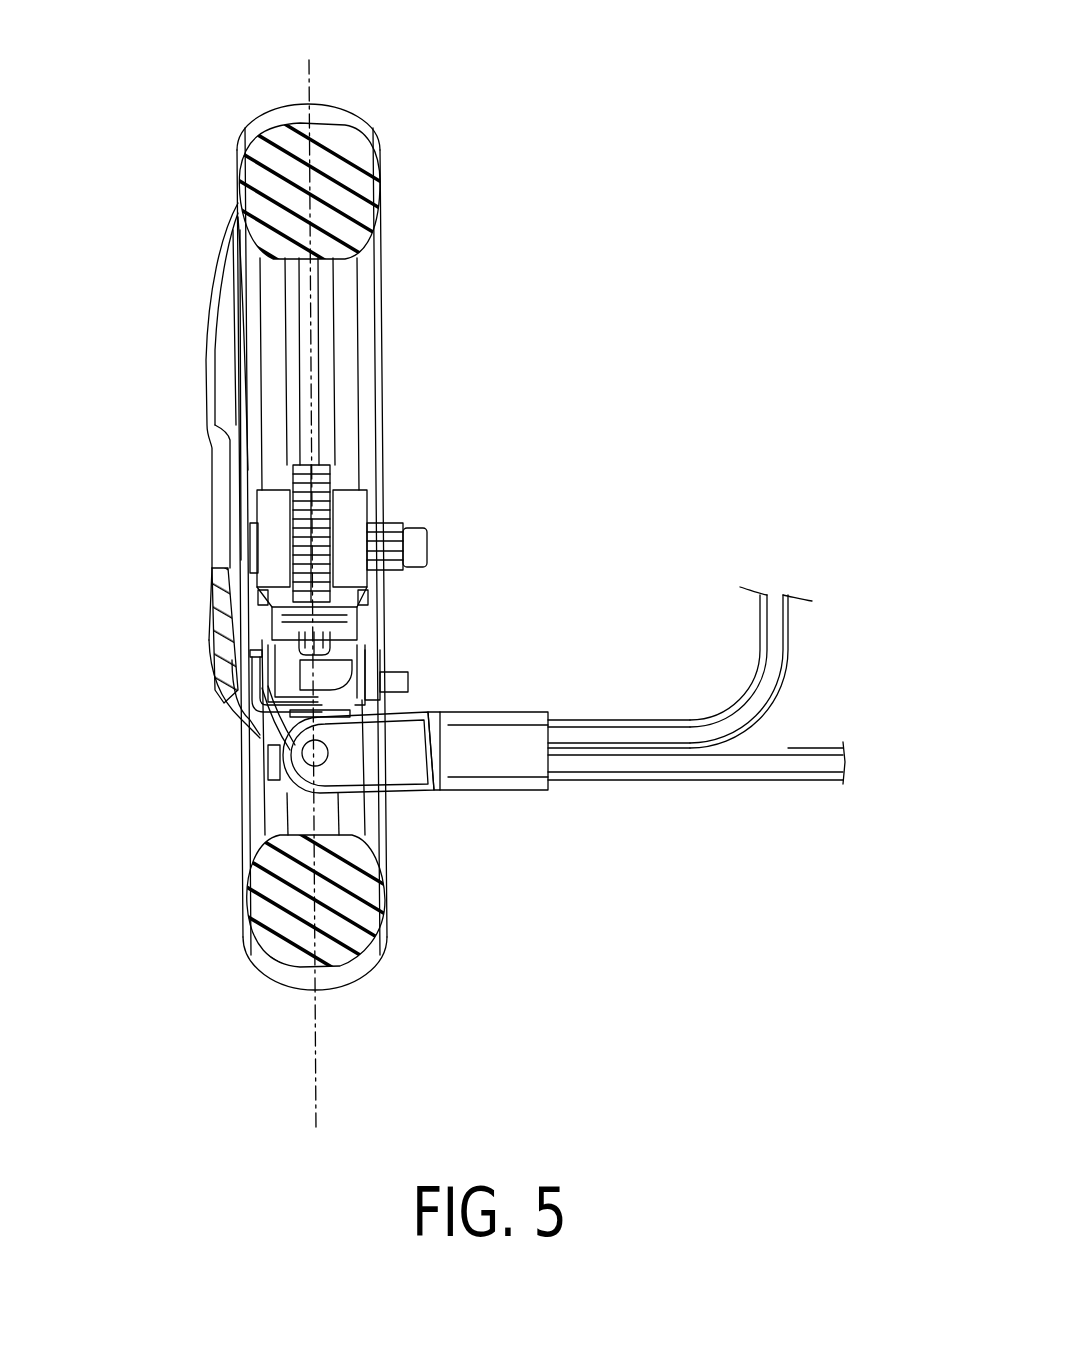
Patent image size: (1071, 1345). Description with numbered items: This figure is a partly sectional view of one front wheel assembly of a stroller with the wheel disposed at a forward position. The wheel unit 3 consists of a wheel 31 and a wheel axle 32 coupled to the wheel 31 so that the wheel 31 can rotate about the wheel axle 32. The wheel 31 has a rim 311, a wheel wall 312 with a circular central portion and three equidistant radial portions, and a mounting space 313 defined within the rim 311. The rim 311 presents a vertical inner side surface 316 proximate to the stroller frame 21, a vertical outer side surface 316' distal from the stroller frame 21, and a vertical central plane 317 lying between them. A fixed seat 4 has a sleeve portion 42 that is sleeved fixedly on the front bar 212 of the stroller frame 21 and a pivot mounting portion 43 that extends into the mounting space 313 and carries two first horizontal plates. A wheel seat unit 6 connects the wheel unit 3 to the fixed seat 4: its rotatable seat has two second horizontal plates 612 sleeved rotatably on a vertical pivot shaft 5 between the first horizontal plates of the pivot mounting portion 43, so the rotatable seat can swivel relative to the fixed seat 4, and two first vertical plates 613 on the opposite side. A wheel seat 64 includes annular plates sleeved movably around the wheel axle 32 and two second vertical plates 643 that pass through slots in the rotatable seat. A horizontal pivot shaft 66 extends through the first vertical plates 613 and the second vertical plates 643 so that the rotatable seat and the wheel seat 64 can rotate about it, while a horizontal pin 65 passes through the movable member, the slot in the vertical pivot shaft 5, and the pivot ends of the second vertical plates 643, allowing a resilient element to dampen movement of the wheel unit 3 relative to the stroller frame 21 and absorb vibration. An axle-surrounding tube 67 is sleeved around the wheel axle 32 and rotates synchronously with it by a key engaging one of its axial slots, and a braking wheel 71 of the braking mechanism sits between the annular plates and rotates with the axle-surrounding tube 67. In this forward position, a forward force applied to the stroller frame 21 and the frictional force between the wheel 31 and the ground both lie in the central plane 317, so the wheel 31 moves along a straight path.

The wheel unit 3 is at (190, 532).
The wheel 31 is at (337, 107).
The rim 311 is at (380, 193).
The wheel wall 312 is at (220, 368).
The mounting space 313 is at (352, 372).
The inner side surface 316 is at (343, 207).
The outer side surface 316' is at (171, 417).
The central plane 317 is at (318, 1018).
The wheel axle 32 is at (418, 545).
The fixed seat 4 is at (482, 812).
The sleeve portion 42 is at (522, 770).
The pivot mounting portion 43 is at (395, 770).
The vertical pivot shaft 5 is at (368, 790).
The wheel seat unit 6 is at (418, 690).
The second horizontal plates 612 is at (255, 737).
The first vertical plates 613 is at (368, 598).
The wheel seat 64 is at (348, 506).
The second vertical plates 643 is at (268, 800).
The horizontal pin 65 is at (262, 757).
The horizontal pivot shaft 66 is at (400, 685).
The axle-surrounding tube 67 is at (388, 527).
The braking wheel 71 is at (320, 467).
The stroller frame 21 is at (622, 783).
The front bar 212 is at (615, 742).